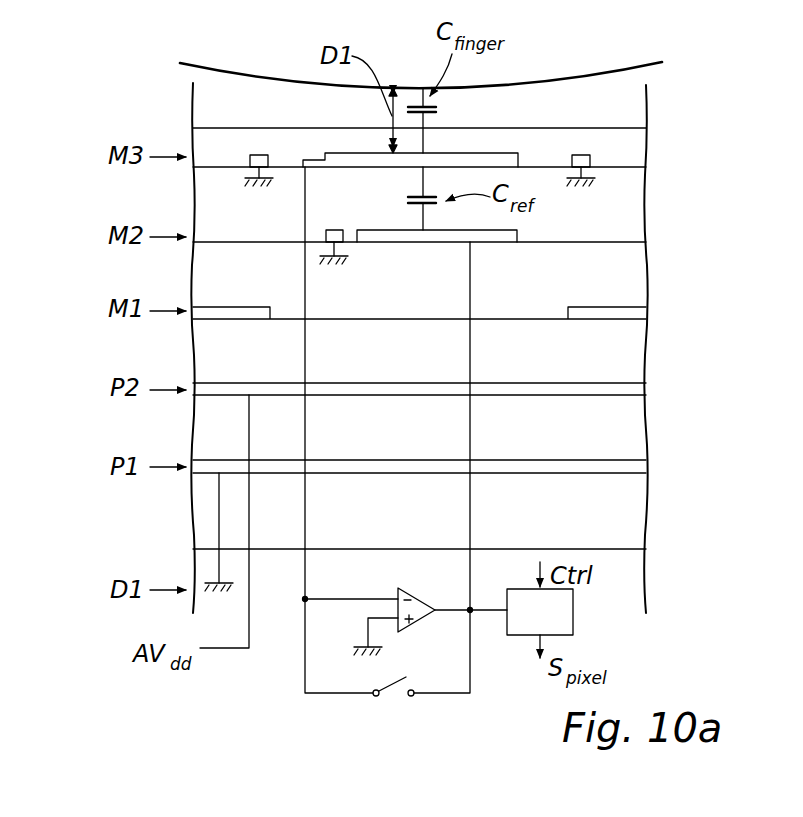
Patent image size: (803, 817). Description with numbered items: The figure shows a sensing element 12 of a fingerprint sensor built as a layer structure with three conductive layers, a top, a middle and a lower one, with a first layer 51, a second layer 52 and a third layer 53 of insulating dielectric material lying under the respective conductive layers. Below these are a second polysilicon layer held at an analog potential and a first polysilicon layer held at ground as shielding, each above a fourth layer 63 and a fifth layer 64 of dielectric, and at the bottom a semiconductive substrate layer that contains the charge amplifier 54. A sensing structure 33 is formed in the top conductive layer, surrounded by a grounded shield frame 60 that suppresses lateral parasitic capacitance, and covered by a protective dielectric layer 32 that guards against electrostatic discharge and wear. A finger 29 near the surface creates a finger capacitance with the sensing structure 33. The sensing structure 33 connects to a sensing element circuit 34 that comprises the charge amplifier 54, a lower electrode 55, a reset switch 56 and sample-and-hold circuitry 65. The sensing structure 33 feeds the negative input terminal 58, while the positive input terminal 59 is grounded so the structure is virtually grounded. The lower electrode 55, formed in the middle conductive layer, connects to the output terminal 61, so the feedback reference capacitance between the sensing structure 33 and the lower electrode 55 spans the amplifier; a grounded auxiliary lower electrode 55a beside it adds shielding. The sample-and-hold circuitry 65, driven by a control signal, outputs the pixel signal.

The sensing element 12 is at (102, 60).
The finger 29 is at (420, 25).
The protective dielectric layer 32 is at (637, 146).
The sensing structure 33 is at (507, 158).
The shield frame 60 is at (258, 154).
The first layer of insulating dielectric material 51 is at (630, 210).
The auxiliary lower electrode 55a is at (304, 240).
The lower electrode 55 is at (477, 236).
The second layer of insulating dielectric material 52 is at (630, 294).
The third layer of insulating dielectric material 53 is at (625, 371).
The fourth layer of insulating dielectric material 63 is at (620, 448).
The fifth layer of insulating dielectric material 64 is at (632, 528).
The sensing element circuit 34 is at (270, 684).
The reset switch 56 is at (384, 708).
The negative input terminal 58 is at (362, 598).
The charge amplifier 54 is at (414, 606).
The positive input terminal 59 is at (366, 608).
The output terminal 61 is at (448, 613).
The sample-and-hold circuitry 65 is at (573, 597).